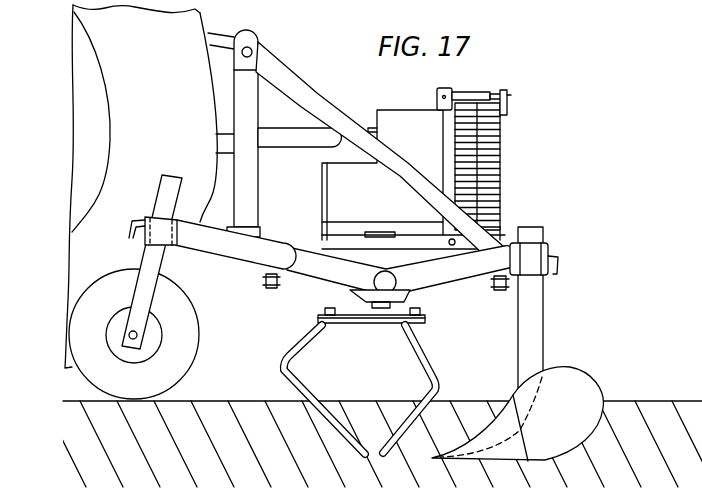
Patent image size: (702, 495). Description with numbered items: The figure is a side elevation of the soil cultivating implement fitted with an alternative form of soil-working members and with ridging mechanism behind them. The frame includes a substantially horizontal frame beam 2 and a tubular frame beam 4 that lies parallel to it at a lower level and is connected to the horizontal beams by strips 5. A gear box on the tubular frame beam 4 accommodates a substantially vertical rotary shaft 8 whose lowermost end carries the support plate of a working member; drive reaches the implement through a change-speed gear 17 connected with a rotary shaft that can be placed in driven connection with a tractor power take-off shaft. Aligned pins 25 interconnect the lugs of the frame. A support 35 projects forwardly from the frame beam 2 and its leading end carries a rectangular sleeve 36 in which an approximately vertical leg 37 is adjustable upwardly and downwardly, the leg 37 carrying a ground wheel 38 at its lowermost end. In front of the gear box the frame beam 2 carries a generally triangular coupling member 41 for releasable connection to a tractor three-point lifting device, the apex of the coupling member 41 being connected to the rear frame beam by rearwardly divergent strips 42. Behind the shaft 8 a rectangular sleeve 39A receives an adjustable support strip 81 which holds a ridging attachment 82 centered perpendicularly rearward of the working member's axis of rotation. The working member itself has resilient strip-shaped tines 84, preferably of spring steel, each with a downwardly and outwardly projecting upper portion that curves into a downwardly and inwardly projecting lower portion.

The frame beam 2 is at (340, 249).
The tubular frame beam 4 is at (400, 270).
The strip 5 is at (322, 272).
The rotary shaft 8 is at (360, 301).
The change-speed gear 17 is at (511, 178).
The pin 25 is at (263, 283).
The support 35 is at (205, 252).
The rectangular sleeve 36 is at (152, 216).
The leg 37 is at (173, 175).
The ground wheel 38 is at (110, 282).
The rectangular sleeve 39A is at (548, 247).
The coupling member 41 is at (243, 86).
The strip 42 is at (316, 94).
The support strip 81 is at (540, 317).
The ridging attachment 82 is at (578, 388).
The tine 84 is at (282, 368).